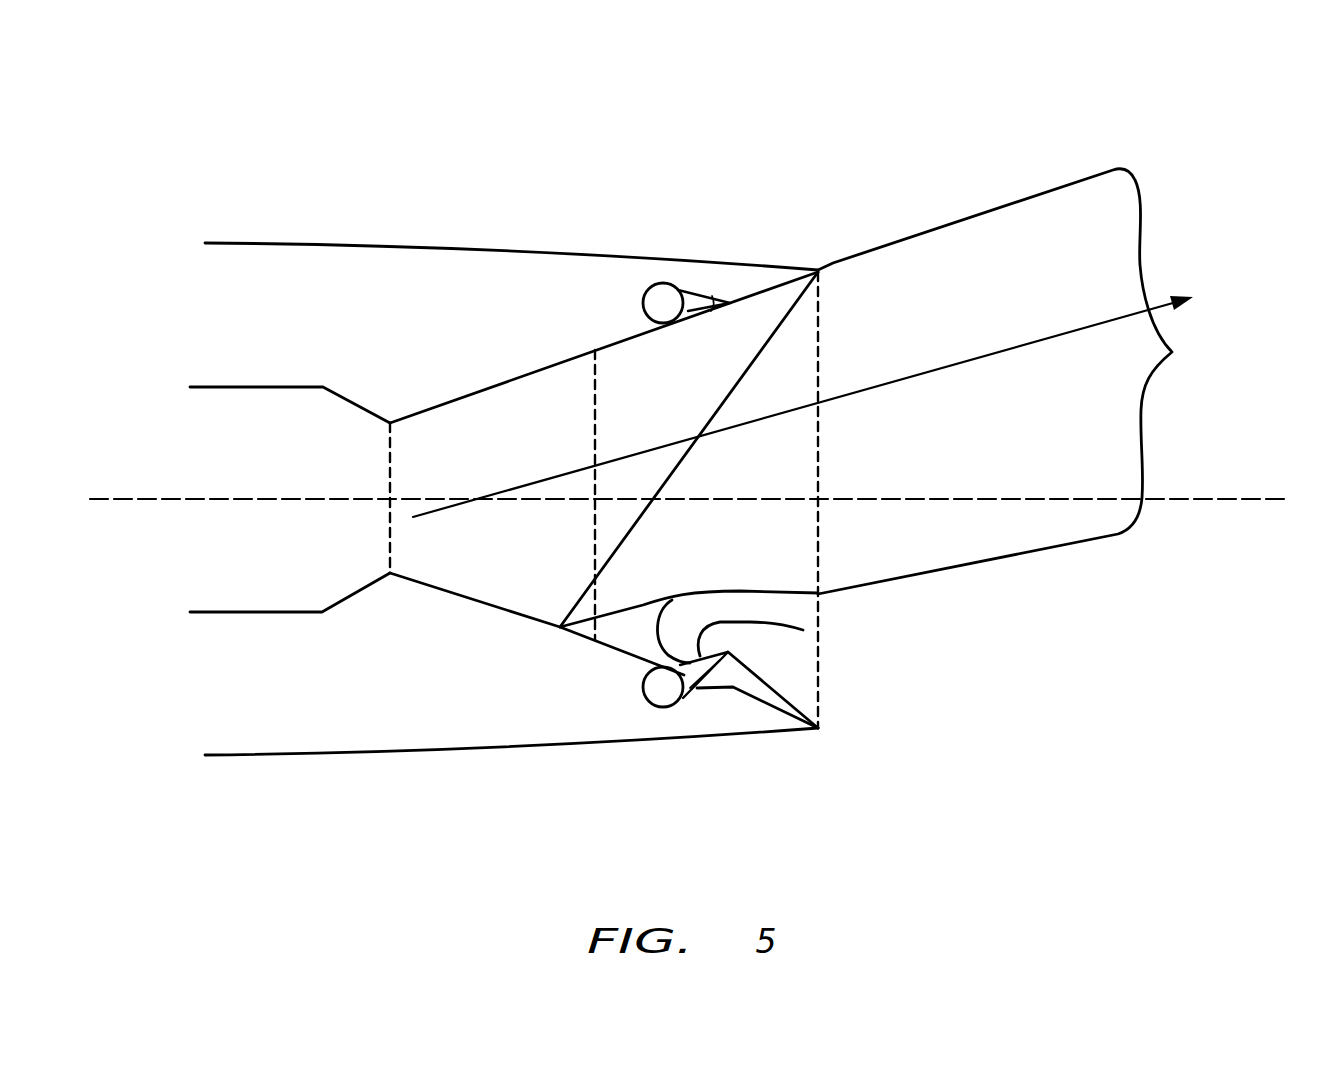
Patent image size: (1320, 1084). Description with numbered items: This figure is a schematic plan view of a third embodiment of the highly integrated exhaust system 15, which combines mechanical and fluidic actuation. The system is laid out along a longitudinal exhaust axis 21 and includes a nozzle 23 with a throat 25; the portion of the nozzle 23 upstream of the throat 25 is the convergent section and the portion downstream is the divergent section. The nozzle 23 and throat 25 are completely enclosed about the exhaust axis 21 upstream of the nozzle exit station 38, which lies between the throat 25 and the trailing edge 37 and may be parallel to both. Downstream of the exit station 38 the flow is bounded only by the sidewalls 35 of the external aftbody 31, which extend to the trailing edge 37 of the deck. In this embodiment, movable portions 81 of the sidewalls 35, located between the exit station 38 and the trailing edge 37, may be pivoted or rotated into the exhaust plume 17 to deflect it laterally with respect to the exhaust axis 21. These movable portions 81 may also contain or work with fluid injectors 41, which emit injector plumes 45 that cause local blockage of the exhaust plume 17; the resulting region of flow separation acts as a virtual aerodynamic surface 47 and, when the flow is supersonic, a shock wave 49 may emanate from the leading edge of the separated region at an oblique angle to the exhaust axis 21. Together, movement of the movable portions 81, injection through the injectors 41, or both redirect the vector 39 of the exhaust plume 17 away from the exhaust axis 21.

The highly integrated exhaust system 15 is at (1203, 100).
The exhaust plume 17 is at (1012, 381).
The exhaust axis 21 is at (1202, 499).
The nozzle 23 is at (327, 384).
The throat 25 is at (390, 455).
The external aftbody 31 is at (615, 255).
The sidewalls 35 is at (634, 336).
The trailing edge 37 is at (820, 437).
The nozzle exit station 38 is at (594, 530).
The vector 39 is at (827, 393).
The fluid injectors 41 is at (818, 710).
The injector plumes 45 is at (777, 610).
The virtual aerodynamic surface 47 is at (643, 603).
The shock wave 49 is at (732, 393).
The movable portions 81 is at (712, 297).